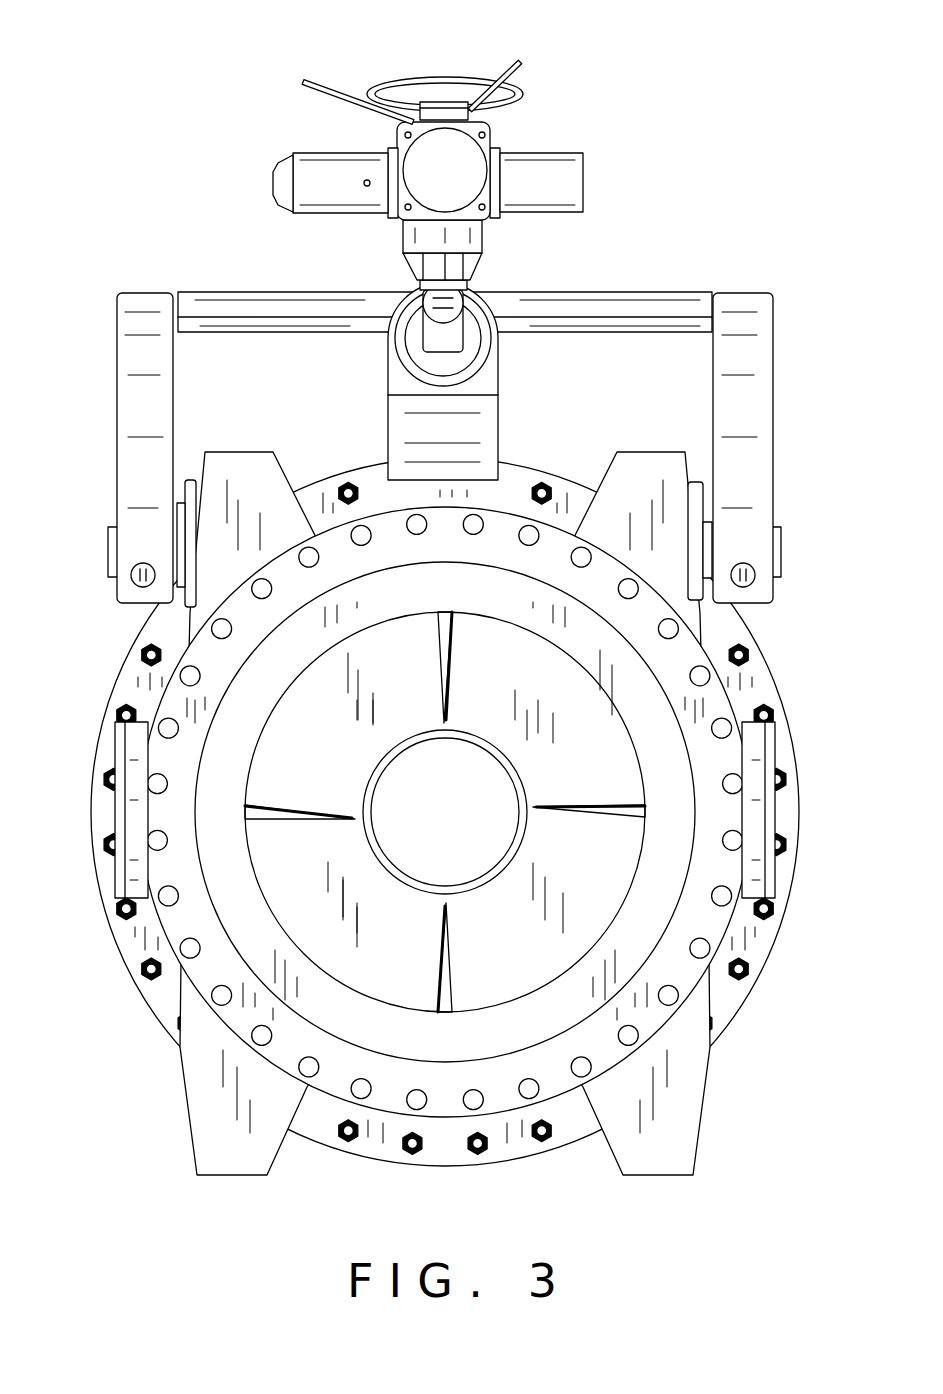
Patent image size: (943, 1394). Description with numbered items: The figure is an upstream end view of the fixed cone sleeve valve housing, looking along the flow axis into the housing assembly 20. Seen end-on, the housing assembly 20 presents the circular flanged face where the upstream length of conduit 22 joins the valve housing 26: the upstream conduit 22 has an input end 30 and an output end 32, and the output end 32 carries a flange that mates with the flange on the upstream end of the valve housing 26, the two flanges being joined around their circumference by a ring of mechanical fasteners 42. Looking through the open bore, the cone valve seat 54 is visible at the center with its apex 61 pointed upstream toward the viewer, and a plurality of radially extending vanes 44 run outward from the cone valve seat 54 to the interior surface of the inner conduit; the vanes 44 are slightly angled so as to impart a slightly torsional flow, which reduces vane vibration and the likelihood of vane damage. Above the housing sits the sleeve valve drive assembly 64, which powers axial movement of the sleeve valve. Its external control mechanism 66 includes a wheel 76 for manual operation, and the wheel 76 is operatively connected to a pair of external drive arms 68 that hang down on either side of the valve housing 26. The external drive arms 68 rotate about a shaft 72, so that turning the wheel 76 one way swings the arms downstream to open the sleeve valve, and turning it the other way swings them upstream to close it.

The housing assembly 20 is at (782, 642).
The upstream length of conduit 22 is at (163, 933).
The valve housing 26 is at (123, 930).
The input end 30 is at (575, 1023).
The output end 32 is at (520, 978).
The mechanical fasteners 42 is at (770, 917).
The radially extending vanes 44 is at (283, 800).
The cone valve seat 54 is at (337, 732).
The apex 61 is at (418, 792).
The sleeve valve drive assembly 64 is at (557, 142).
The external control mechanism 66 is at (347, 173).
The external drive arms 68 is at (117, 357).
The shaft 72 is at (110, 552).
The wheel 76 is at (473, 77).